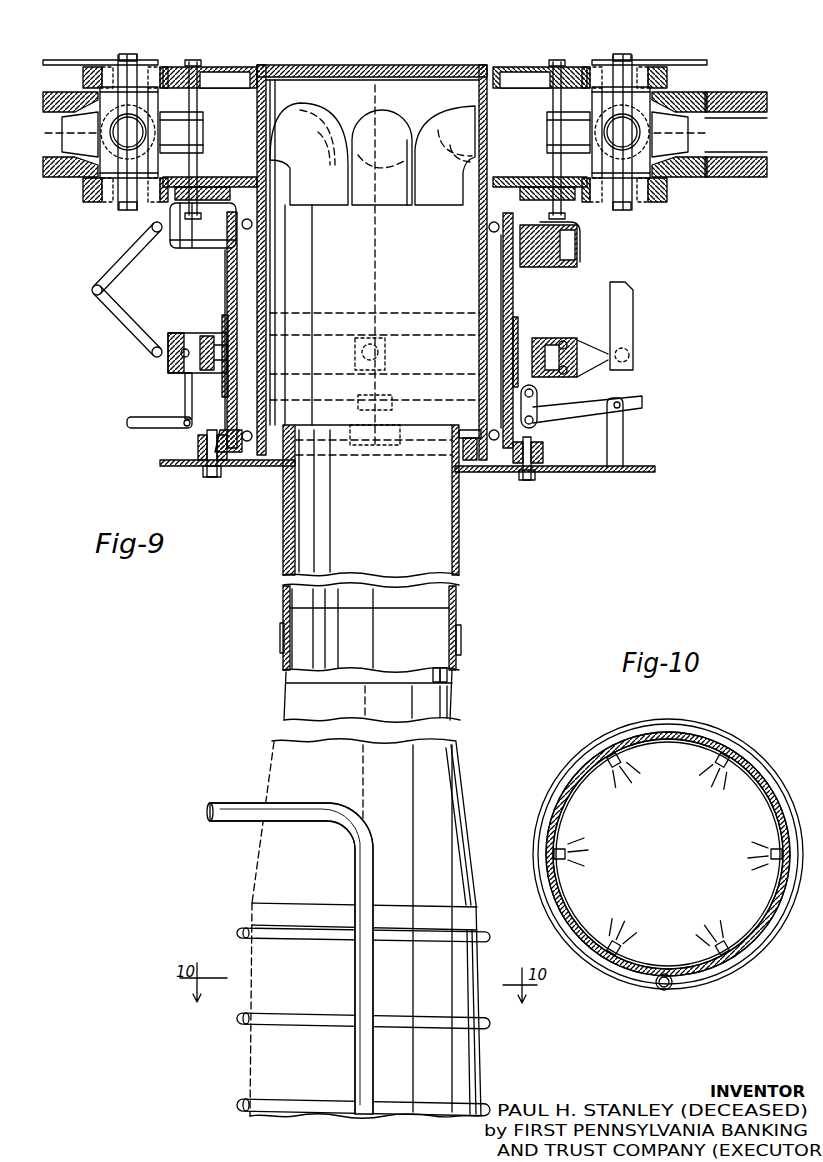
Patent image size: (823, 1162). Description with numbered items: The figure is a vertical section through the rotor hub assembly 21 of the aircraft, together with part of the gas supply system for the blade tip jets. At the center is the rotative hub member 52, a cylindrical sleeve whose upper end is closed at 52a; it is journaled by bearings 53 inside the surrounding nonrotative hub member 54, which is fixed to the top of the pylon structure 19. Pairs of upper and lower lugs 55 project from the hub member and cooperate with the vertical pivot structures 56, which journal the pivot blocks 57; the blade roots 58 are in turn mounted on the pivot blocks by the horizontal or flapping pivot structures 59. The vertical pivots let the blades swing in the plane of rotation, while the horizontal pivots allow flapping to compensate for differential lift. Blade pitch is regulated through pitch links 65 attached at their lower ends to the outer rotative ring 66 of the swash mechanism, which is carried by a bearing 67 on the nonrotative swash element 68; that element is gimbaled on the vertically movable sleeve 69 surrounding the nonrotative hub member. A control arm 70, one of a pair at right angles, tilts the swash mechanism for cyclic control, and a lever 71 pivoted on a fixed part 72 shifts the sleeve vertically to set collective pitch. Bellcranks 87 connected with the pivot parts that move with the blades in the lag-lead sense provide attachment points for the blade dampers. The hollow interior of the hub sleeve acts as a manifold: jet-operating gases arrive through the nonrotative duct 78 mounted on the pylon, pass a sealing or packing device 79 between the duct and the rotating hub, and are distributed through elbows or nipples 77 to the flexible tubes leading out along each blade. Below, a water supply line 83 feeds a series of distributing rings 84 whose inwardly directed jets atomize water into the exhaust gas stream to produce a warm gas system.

In FIG. 9, the pylon structure 19 is at (568, 470).
In FIG. 9, the valve assembly 21 is at (648, 246).
In FIG. 9, the rotative hub member 52 is at (266, 90).
In FIG. 9, the closed upper end of hub member 52a is at (372, 67).
In FIG. 9, the bearings 53 is at (235, 247).
In FIG. 9, the nonrotative hub member 54 is at (514, 297).
In FIG. 9, the upper and lower lugs 55 is at (238, 180).
In FIG. 9, the vertical pivot structures 56 is at (162, 68).
In FIG. 9, the pivot blocks 57 is at (110, 98).
In FIG. 9, the blade roots 58 is at (60, 177).
In FIG. 9, the horizontal or flapping pivot structures 59 is at (127, 125).
In FIG. 9, the pitch link 65 is at (628, 317).
In FIG. 9, the outer rotative ring of swash mechanism 66 is at (578, 373).
In FIG. 9, the bearing 67 is at (183, 335).
In FIG. 9, the nonrotative swash element 68 is at (199, 348).
In FIG. 9, the vertically movable sleeve 69 is at (518, 328).
In FIG. 9, the control arm 70 is at (181, 397).
In FIG. 9, the lever 71 is at (547, 417).
In FIG. 9, the fixed pivot 72 is at (623, 441).
In FIG. 9, the elbow or nipple 77 is at (462, 117).
In FIG. 9, the duct 78 is at (452, 553).
In FIG. 9, the sealing or packing device 79 is at (472, 465).
In FIG. 9, the water supply line 83 is at (242, 802).
In FIG. 10, the water supply line 83 is at (666, 991).
In FIG. 9, the distributing rings 84 is at (277, 928).
In FIG. 10, the distributing rings 84 is at (610, 738).
In FIG. 9, the bellcranks 87 is at (62, 62).